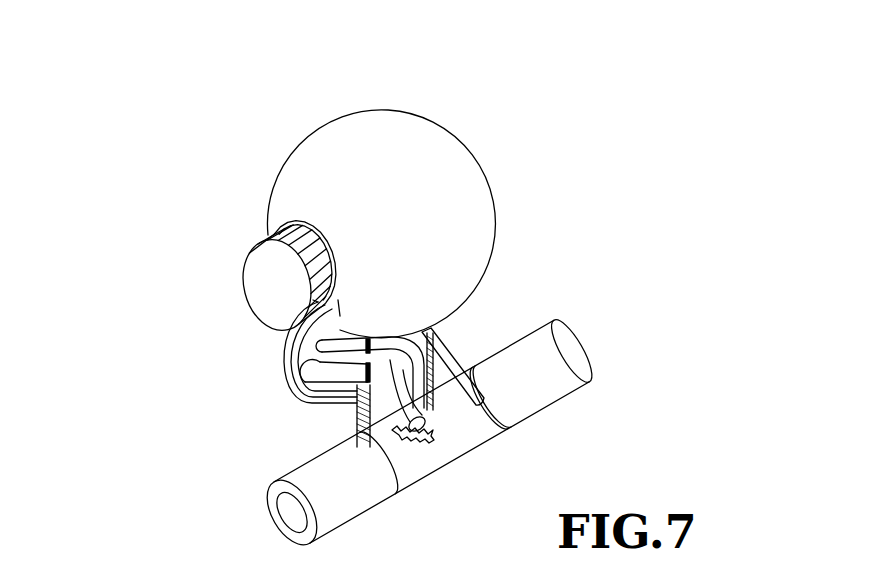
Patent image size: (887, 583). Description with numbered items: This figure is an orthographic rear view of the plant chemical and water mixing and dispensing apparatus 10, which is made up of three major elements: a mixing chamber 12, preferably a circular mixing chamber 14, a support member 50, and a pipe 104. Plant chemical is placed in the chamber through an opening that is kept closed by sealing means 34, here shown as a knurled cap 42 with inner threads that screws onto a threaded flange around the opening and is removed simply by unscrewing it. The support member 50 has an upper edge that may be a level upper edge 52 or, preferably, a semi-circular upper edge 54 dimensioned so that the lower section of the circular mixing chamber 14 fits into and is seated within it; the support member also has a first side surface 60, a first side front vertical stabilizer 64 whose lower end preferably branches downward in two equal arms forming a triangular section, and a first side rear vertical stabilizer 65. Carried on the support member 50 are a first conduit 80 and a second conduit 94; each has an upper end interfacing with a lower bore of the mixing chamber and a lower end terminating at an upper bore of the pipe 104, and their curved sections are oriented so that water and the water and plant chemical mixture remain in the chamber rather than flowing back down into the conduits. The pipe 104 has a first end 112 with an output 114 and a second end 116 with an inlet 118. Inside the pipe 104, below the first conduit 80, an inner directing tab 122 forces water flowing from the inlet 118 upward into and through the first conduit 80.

The plant chemical and water mixing and dispensing apparatus 10 is at (68, 34).
The mixing chamber 12 is at (446, 178).
The circular mixing chamber 14 is at (549, 100).
The sealing means 34 is at (230, 273).
The cap 42 is at (273, 282).
The support member 50 is at (413, 349).
The level upper edge 52 is at (470, 265).
The semi-circular upper edge 54 is at (362, 334).
The first side surface 60 is at (447, 340).
The first side front vertical stabilizer 64 is at (412, 360).
The first side rear vertical stabilizer 65 is at (355, 435).
The first conduit 80 is at (317, 362).
The second conduit 94 is at (423, 333).
The pipe 104 is at (449, 442).
The first end 112 is at (628, 368).
The output 114 is at (590, 345).
The second end 116 is at (273, 490).
The inlet 118 is at (292, 517).
The inner directing tab 122 is at (421, 450).